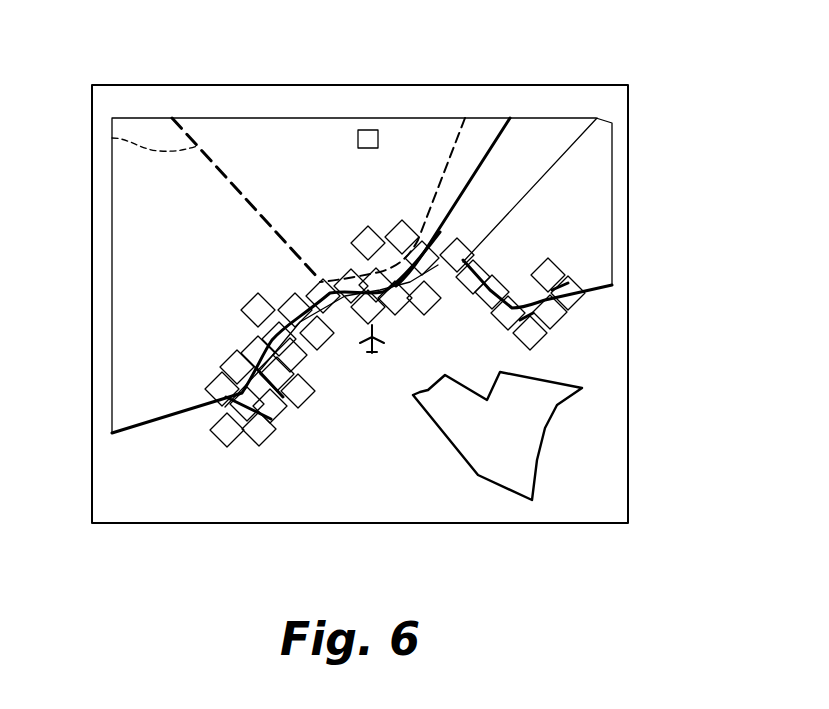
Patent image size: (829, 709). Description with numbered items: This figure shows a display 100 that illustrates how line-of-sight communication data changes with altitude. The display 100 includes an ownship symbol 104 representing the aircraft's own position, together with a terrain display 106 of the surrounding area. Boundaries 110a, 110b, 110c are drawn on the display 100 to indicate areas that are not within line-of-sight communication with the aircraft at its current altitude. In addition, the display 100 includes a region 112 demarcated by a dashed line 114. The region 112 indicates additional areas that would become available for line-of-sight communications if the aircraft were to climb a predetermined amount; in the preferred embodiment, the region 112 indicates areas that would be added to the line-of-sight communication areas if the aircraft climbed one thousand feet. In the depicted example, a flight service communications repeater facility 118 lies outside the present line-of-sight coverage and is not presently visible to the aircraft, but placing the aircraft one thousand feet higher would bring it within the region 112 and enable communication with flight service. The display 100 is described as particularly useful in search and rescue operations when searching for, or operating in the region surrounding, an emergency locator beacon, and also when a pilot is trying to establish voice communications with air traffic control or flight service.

The display 100 is at (466, 73).
The ownship symbol 104 is at (373, 354).
The terrain display 106 is at (205, 430).
The boundary 110a is at (111, 217).
The boundary 110b is at (612, 137).
The boundary 110c is at (532, 500).
The region 112 is at (297, 154).
The dashed line 114 is at (112, 138).
The flight service communications repeater facility 118 is at (371, 130).